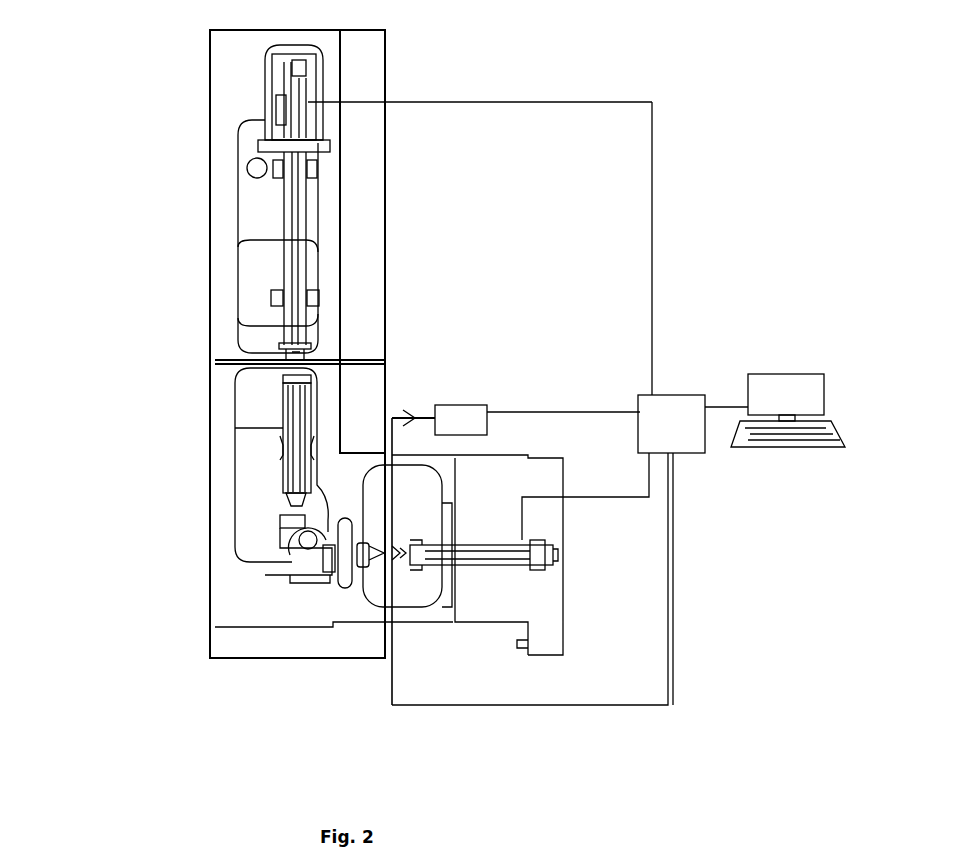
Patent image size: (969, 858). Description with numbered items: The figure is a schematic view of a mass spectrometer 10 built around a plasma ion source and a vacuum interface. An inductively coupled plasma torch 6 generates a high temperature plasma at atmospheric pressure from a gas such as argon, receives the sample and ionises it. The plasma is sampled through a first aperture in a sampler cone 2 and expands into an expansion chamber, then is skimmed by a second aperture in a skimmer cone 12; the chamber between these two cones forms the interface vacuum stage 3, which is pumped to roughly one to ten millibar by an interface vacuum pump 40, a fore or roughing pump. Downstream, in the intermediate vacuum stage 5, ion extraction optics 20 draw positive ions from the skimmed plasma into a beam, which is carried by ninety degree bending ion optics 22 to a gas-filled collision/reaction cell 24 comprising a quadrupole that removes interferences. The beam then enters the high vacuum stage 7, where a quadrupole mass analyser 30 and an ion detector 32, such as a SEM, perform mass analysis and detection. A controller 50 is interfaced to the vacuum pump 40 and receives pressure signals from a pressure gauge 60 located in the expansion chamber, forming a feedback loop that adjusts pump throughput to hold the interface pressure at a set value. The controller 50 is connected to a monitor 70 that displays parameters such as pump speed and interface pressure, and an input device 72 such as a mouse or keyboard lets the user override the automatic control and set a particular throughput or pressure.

The aperture sampler cone 2 is at (396, 568).
The interface vacuum stage 3 is at (393, 463).
The intermediate vacuum stage 5 is at (332, 393).
The inductively coupled plasma torch 6 is at (533, 572).
The high vacuum stage 7 is at (335, 145).
The mass spectrometer 10 is at (140, 382).
The apertured skimmer cone 12 is at (376, 572).
The ion extraction optics 20 is at (360, 578).
The 90 degree bending ion optics 22 is at (275, 553).
The collision/reaction cell 24 is at (288, 437).
The quadrupole mass analyser 30 is at (287, 195).
The ion detector 32 is at (272, 75).
The interface vacuum pump 40 is at (455, 403).
The controller 50 is at (660, 400).
The pressure gauge 60 is at (398, 580).
The visual display or monitor 70 is at (770, 375).
The input device 72 is at (830, 435).